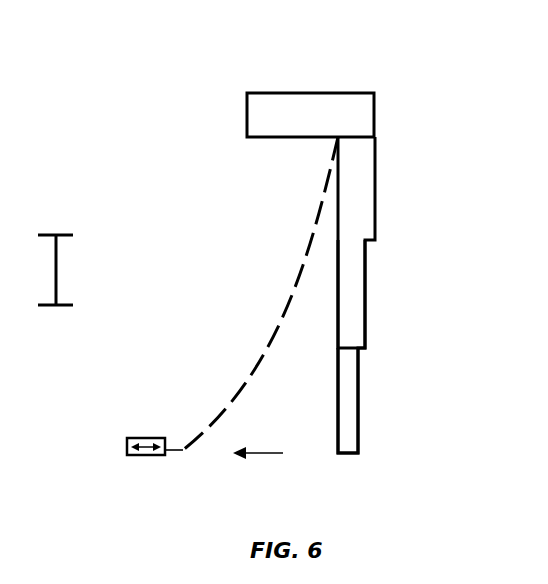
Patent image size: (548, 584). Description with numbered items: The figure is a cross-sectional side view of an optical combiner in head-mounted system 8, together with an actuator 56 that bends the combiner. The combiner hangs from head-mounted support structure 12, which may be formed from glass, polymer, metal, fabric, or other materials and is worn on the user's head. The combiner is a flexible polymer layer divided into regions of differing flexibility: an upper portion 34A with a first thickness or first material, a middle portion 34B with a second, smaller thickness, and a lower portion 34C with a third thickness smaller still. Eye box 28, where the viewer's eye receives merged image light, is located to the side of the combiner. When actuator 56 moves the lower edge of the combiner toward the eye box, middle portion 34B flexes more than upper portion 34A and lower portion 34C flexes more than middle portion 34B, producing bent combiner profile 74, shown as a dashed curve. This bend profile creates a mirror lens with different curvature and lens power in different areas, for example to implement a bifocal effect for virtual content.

The system 8 is at (453, 57).
The support structure 12 is at (276, 100).
The eye box 28 is at (70, 234).
The upper portion 34A is at (402, 137).
The middle portion 34B is at (387, 247).
The lower portion 34C is at (373, 355).
The actuator 56 is at (146, 455).
The bent combiner profile 74 is at (253, 367).